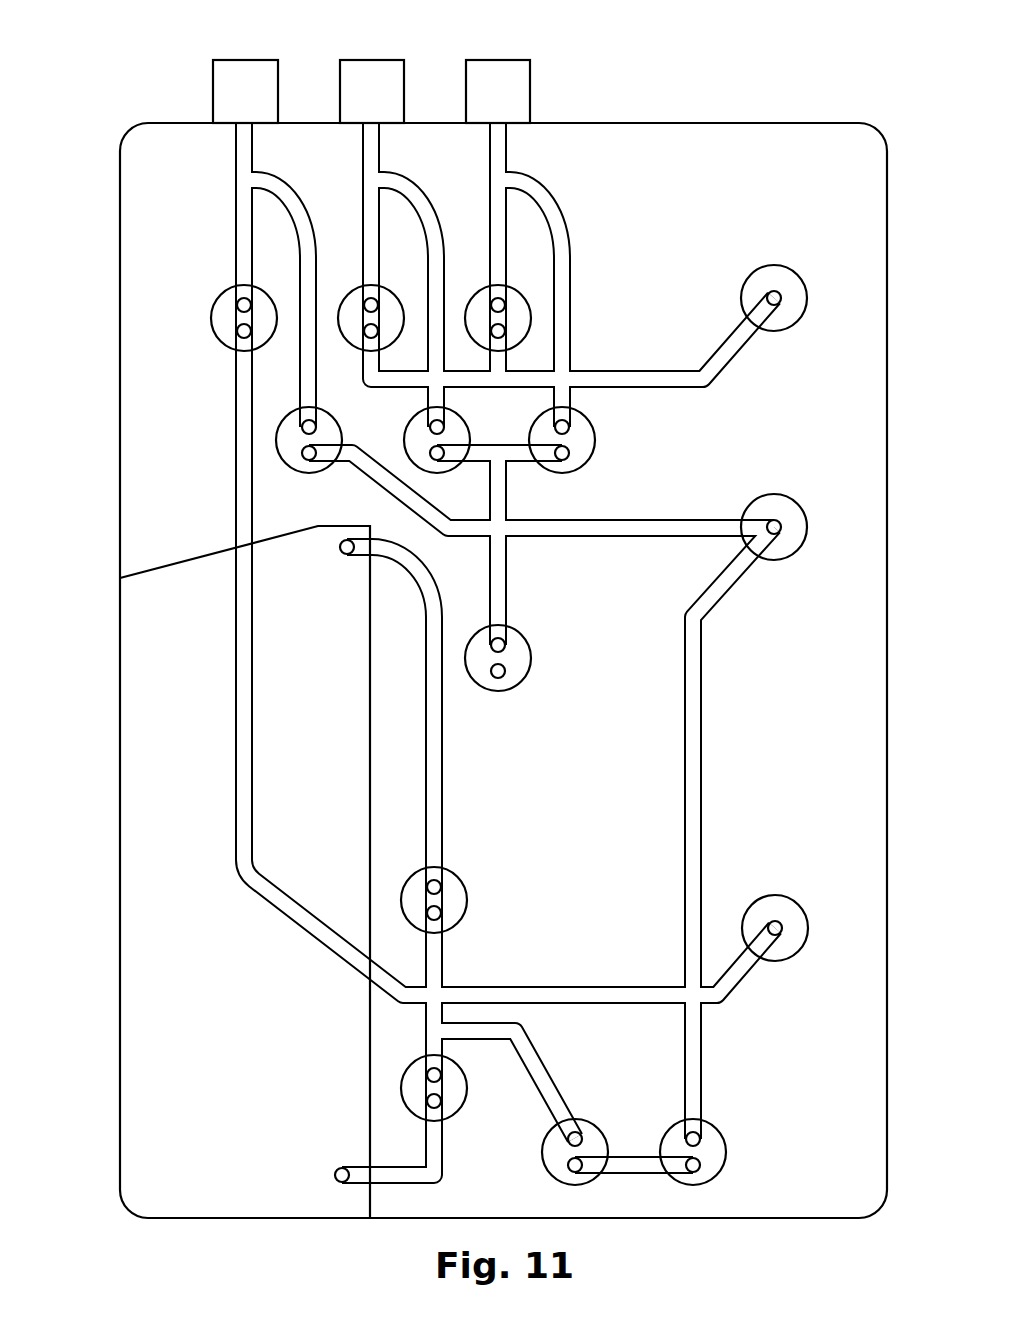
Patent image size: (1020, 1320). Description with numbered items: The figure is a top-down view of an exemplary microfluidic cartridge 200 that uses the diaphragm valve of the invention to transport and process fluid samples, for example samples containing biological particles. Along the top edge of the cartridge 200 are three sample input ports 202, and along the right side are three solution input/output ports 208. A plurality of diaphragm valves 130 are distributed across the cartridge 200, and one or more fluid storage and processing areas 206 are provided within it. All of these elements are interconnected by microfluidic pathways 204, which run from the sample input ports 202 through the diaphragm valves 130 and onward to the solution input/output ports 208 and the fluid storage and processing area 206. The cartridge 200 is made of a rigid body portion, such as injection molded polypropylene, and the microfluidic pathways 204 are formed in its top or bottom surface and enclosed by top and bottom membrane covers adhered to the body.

The diaphragm valve 130 is at (352, 313).
The microfluidic cartridge 200 is at (730, 122).
The sample input port 202 is at (249, 58).
The microfluidic pathway 204 is at (243, 464).
The fluid storage and processing area 206 is at (130, 626).
The solution input/output port 208 is at (790, 282).